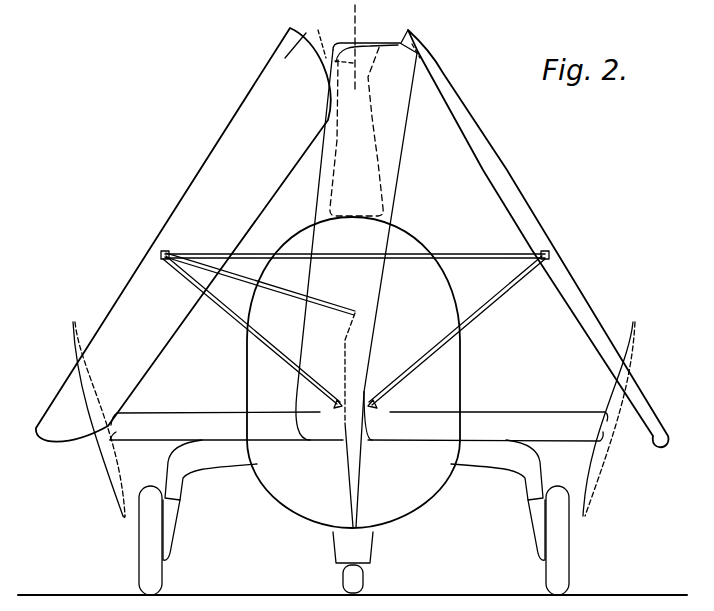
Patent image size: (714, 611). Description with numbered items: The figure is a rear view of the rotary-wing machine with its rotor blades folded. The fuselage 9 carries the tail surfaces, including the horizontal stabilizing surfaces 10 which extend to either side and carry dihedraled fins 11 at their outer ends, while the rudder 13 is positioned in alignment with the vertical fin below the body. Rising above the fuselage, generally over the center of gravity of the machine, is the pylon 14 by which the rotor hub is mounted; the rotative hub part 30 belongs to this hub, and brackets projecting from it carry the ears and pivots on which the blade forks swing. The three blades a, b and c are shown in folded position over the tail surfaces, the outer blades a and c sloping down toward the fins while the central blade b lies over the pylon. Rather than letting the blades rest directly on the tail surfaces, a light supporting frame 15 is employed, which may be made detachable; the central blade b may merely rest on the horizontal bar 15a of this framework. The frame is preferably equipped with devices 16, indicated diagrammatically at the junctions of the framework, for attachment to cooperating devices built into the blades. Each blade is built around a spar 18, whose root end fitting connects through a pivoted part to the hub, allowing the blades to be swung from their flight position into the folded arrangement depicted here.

The fuselage 9 is at (460, 366).
The horizontal stabilizing surfaces 10 is at (183, 398).
The dihedraled fins 11 is at (73, 343).
The rudder 13 is at (355, 476).
The pylon 14 is at (378, 162).
The supporting frame 15 is at (230, 312).
The horizontal bar 15a is at (482, 254).
The attachment devices 16 is at (160, 255).
The spar 18 is at (320, 40).
The rotative hub part 30 is at (357, 12).
The blade a is at (190, 191).
The central blade b is at (387, 202).
The blade c is at (510, 190).